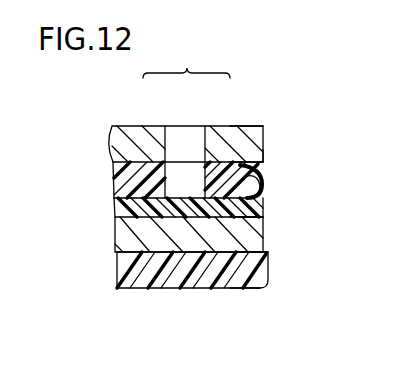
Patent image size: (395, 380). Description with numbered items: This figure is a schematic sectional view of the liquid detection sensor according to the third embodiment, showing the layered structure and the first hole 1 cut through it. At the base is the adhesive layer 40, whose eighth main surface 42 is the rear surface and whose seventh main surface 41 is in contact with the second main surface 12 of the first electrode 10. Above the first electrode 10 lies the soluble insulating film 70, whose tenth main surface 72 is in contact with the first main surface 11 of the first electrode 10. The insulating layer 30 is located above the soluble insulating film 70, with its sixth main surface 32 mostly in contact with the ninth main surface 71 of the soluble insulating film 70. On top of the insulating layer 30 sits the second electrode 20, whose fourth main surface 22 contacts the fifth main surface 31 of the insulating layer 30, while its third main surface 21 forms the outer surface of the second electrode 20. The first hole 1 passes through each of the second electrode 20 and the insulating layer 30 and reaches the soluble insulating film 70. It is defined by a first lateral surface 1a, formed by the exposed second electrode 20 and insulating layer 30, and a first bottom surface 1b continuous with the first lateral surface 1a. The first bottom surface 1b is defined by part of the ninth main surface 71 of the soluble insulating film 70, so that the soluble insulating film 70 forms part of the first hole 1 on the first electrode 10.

The first hole 1 is at (186, 59).
The first lateral surface 1a is at (181, 134).
The first bottom surface 1b is at (182, 197).
The first electrode 10 is at (117, 234).
The first main surface 11 is at (257, 214).
The second main surface 12 is at (250, 244).
The second electrode 20 is at (125, 146).
The third main surface 21 is at (247, 127).
The fourth main surface 22 is at (262, 170).
The insulating layer 30 is at (125, 182).
The fifth main surface 31 is at (249, 165).
The sixth main surface 32 is at (256, 198).
The adhesive layer 40 is at (118, 270).
The seventh main surface 41 is at (265, 253).
The eighth main surface 42 is at (245, 288).
The soluble insulating film 70 is at (116, 209).
The ninth main surface 71 is at (260, 186).
The tenth main surface 72 is at (254, 223).